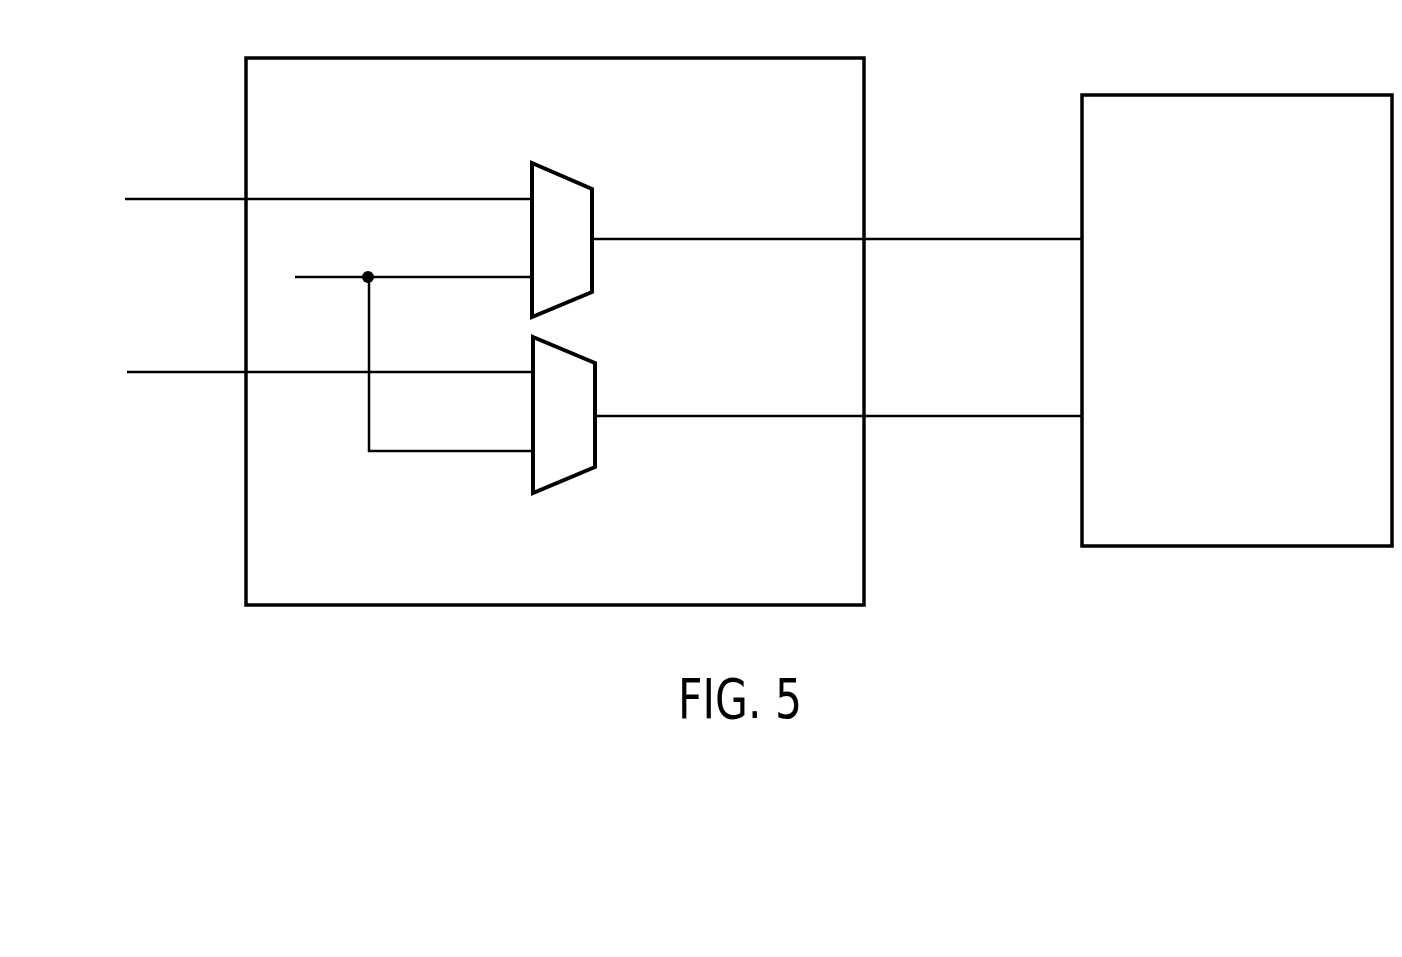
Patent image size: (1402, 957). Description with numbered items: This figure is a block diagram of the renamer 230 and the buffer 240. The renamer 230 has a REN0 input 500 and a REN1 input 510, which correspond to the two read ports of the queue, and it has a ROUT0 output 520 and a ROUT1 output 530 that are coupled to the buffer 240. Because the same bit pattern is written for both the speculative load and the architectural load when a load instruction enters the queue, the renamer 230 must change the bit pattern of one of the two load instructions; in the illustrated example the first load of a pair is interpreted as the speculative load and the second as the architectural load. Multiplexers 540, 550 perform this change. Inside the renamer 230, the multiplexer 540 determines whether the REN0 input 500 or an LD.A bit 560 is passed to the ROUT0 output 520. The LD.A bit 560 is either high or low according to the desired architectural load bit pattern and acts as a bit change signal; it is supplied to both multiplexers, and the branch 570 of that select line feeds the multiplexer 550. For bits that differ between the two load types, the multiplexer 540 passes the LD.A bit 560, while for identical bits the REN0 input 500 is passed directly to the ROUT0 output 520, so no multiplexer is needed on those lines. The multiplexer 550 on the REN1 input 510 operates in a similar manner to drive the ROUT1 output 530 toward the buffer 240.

The renamer 230 is at (839, 580).
The buffer 240 is at (1367, 525).
The REN0 input 500 is at (193, 201).
The REN1 input 510 is at (185, 374).
The ROUT0 output 520 is at (933, 241).
The ROUT1 output 530 is at (950, 418).
The multiplexer 540 is at (593, 203).
The multiplexer 550 is at (596, 370).
The LD.A bit 560 is at (443, 279).
The LD.A bit select line branch 570 is at (450, 453).